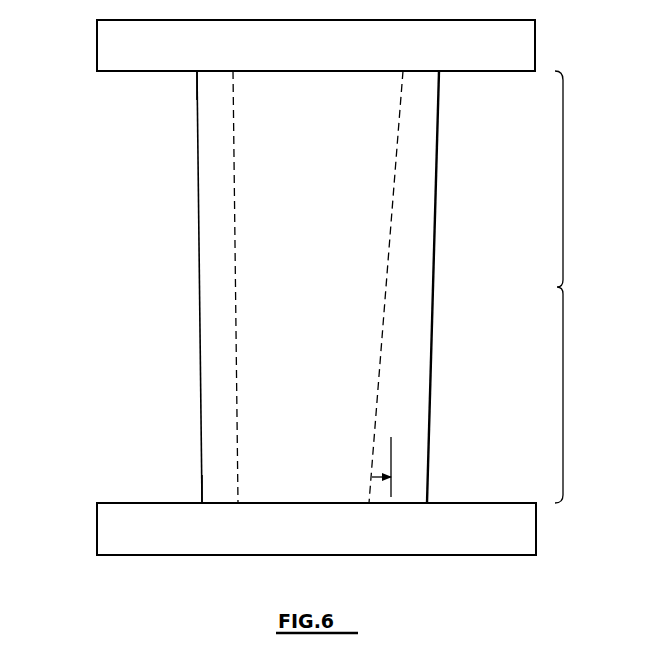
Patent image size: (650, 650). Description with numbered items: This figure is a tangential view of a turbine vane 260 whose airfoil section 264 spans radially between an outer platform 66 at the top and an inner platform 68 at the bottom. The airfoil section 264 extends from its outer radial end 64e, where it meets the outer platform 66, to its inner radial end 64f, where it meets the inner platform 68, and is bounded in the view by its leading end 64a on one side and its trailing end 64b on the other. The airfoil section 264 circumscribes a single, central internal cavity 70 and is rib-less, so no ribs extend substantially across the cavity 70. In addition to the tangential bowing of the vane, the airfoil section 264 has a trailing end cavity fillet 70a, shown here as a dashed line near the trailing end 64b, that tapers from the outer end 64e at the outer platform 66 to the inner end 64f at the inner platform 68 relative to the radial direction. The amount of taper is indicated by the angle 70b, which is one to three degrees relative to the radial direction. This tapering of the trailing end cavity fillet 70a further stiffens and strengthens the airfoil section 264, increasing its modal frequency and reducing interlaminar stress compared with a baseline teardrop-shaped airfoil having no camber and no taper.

The first (outer) platform 66 is at (486, 71).
The second (inner) platform 68 is at (486, 503).
The leading end 64a is at (201, 402).
The trailing end 64b is at (430, 400).
The outer (first) radial end 64e is at (217, 71).
The inner (second) radial end 64f is at (238, 503).
The internal cavity 70 is at (236, 198).
The trailing end cavity fillet 70a is at (388, 232).
The taper angle 70b is at (372, 477).
The airfoil section 264 is at (582, 287).
The turbine vane 260 is at (105, 345).